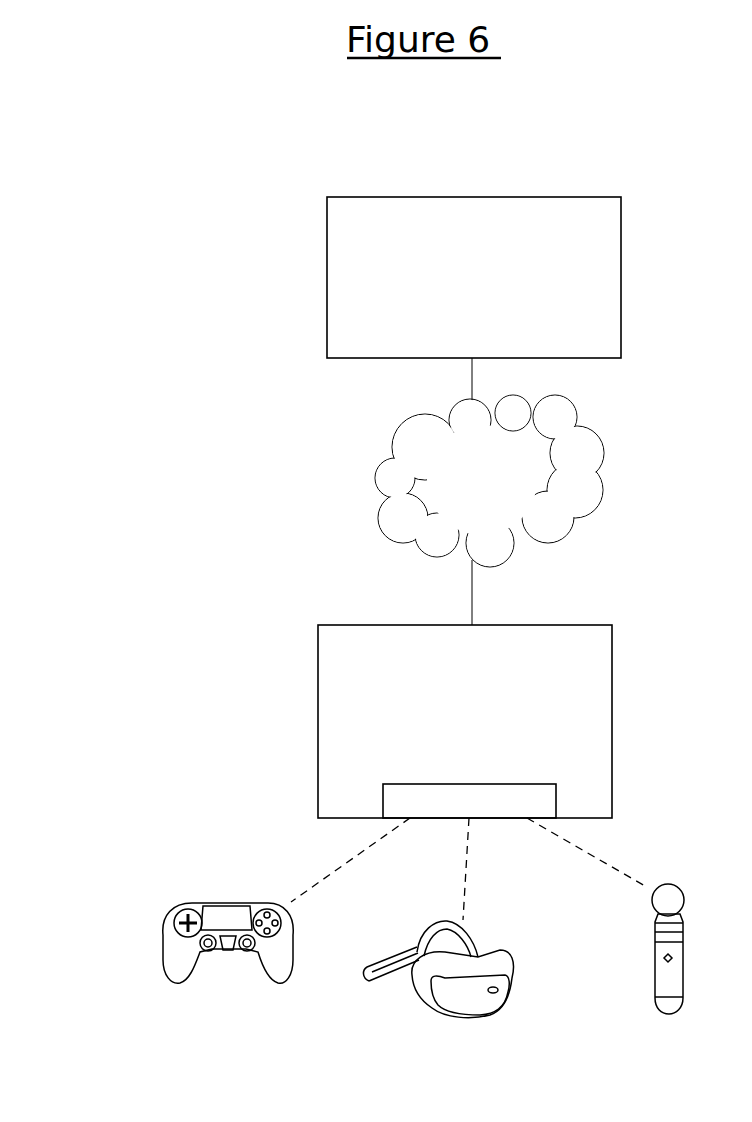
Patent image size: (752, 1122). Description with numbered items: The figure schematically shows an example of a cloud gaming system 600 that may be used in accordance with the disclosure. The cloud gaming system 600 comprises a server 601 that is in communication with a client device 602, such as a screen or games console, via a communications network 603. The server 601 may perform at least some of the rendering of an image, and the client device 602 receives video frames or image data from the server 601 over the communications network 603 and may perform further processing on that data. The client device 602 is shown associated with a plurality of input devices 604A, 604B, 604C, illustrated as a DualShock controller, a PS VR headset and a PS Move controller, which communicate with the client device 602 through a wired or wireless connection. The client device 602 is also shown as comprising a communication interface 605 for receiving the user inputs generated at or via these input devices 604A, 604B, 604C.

The cloud gaming system 600 is at (170, 158).
The server 601 is at (327, 267).
The client device 602 is at (318, 675).
The communications network 603 is at (388, 495).
The input device 604A is at (165, 940).
The input device 604B is at (430, 1007).
The input device 604C is at (655, 997).
The communication interface 605 is at (469, 738).